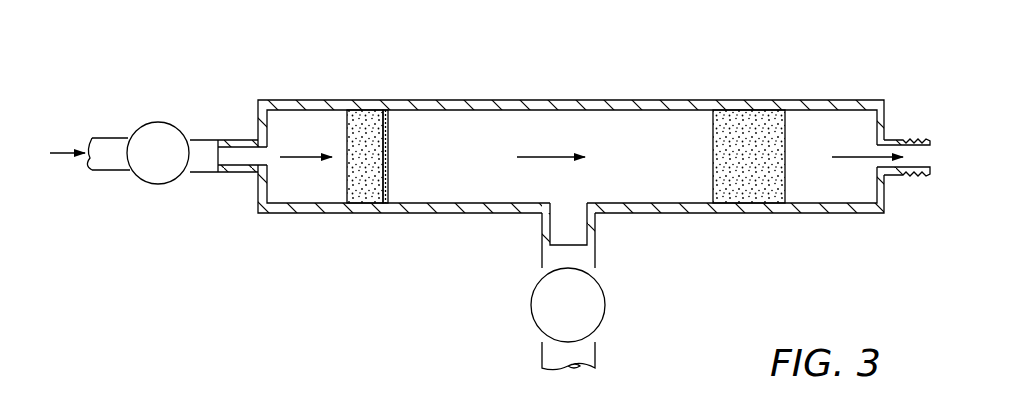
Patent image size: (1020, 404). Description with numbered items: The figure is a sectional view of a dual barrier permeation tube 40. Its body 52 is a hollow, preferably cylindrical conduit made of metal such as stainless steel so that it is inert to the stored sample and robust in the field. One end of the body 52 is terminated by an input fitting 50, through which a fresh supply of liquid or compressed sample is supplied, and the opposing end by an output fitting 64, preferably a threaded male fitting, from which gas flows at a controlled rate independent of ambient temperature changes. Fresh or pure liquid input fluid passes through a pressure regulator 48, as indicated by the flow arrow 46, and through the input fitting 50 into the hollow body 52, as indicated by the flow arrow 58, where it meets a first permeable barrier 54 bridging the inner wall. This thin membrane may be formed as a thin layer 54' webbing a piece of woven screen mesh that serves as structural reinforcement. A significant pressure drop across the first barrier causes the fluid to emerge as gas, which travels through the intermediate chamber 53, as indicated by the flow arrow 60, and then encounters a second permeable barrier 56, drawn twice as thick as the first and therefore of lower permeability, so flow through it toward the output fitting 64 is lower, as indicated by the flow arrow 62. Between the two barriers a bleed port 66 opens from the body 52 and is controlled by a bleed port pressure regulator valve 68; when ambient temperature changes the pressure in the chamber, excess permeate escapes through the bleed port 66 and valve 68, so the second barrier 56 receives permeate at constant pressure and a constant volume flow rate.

The dual barrier permeation tube 40 is at (713, 66).
The flow arrow 46 is at (64, 150).
The pressure regulator 48 is at (155, 185).
The input fitting 50 is at (235, 140).
The body 52 is at (502, 100).
The intermediate chamber 53 is at (644, 175).
The first permeable barrier 54 is at (365, 193).
The thin layer 54' is at (408, 118).
The second permeable barrier 56 is at (753, 177).
The flow arrow 58 is at (297, 159).
The flow arrow 60 is at (543, 157).
The outlet flow arrow 62 is at (847, 160).
The output fitting 64 is at (913, 140).
The bleed port 66 is at (597, 230).
The bleed port pressure regulator valve 68 is at (605, 308).